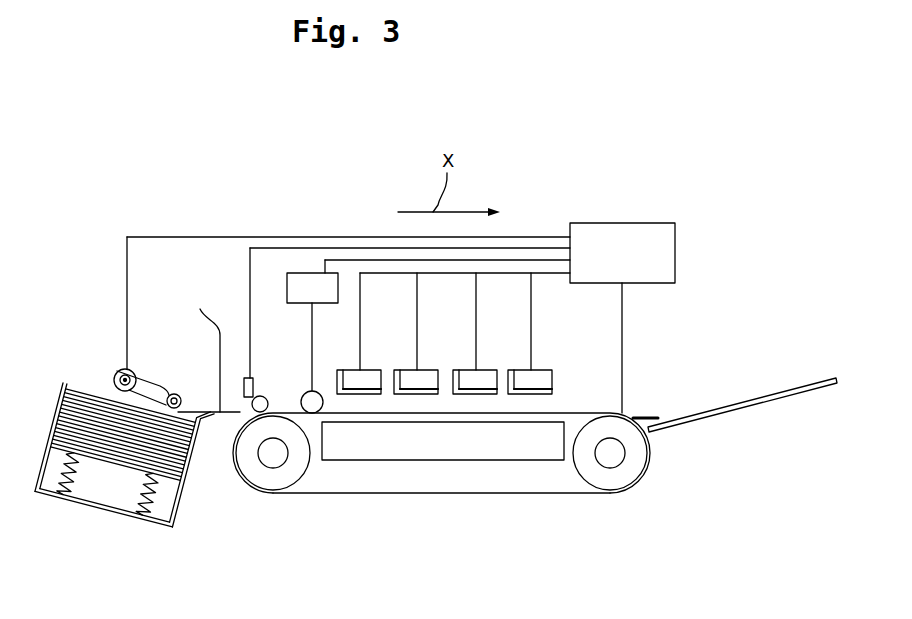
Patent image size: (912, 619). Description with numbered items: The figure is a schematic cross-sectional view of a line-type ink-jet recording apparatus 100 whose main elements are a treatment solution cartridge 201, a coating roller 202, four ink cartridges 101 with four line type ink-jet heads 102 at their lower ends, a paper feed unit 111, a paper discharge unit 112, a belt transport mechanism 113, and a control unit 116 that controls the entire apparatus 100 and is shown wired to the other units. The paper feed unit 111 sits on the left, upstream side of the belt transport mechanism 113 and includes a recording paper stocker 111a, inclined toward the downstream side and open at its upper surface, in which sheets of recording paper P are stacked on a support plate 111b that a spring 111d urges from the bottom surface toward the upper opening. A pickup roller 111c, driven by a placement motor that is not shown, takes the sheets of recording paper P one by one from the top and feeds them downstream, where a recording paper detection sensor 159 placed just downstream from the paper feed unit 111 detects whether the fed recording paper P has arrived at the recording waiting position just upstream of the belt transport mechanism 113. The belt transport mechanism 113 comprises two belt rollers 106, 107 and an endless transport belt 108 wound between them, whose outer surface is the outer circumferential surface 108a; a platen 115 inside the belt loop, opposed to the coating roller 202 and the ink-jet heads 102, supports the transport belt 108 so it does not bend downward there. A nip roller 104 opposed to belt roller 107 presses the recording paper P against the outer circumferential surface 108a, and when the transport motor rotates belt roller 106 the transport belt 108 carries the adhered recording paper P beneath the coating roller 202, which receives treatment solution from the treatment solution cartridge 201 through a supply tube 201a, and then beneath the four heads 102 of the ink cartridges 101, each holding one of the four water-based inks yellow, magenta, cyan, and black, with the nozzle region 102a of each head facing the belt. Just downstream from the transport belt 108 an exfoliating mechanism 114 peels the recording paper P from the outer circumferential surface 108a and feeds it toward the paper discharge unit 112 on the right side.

The ink-jet recording apparatus 100 is at (723, 172).
The ink cartridges 101 is at (374, 336).
The line type ink-jet heads 102 is at (342, 370).
The nozzle surface 102a is at (430, 394).
The nip roller 104 is at (252, 410).
The belt roller 106 is at (630, 473).
The belt roller 107 is at (263, 473).
The transport belt 108 is at (392, 492).
The outer circumferential surface 108a is at (310, 492).
The paper feed unit 111 is at (157, 335).
The recording paper stocker 111a is at (102, 510).
The support plate 111b is at (167, 525).
The pickup roller 111c is at (172, 394).
The spring 111d is at (65, 507).
The paper discharge unit 112 is at (752, 368).
The belt transport mechanism 113 is at (231, 503).
The exfoliating mechanism 114 is at (648, 416).
The platen 115 is at (363, 447).
The control unit 116 is at (625, 223).
The recording paper detection sensor 159 is at (248, 378).
The treatment solution cartridge 201 is at (308, 282).
The supply tube 201a is at (312, 350).
The coating roller 202 is at (300, 398).
The recording paper P is at (85, 390).